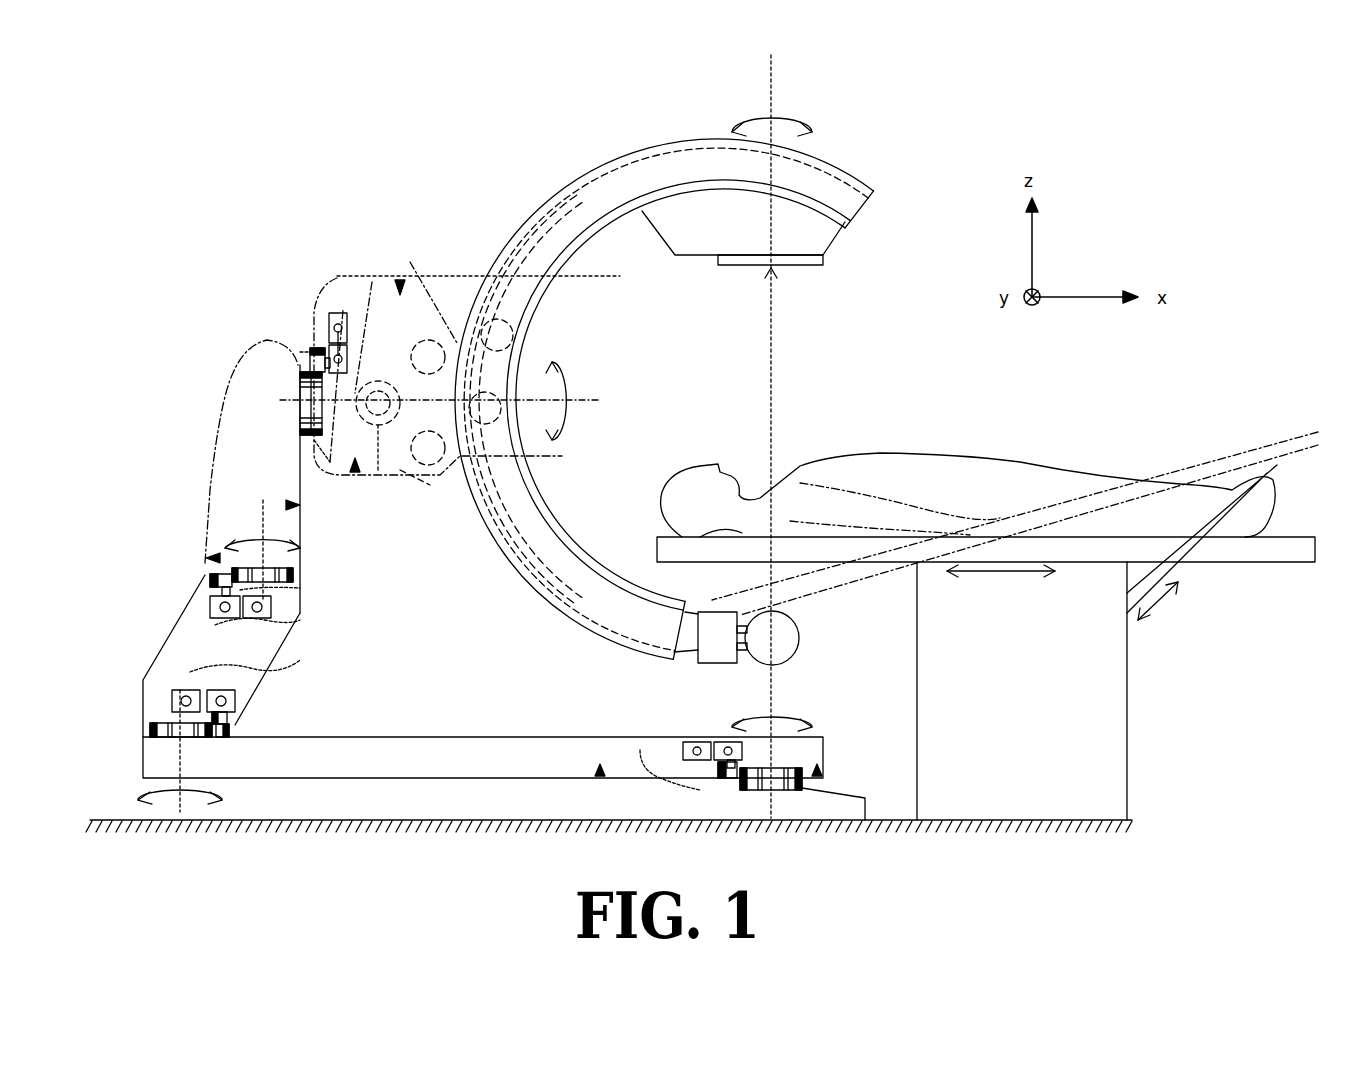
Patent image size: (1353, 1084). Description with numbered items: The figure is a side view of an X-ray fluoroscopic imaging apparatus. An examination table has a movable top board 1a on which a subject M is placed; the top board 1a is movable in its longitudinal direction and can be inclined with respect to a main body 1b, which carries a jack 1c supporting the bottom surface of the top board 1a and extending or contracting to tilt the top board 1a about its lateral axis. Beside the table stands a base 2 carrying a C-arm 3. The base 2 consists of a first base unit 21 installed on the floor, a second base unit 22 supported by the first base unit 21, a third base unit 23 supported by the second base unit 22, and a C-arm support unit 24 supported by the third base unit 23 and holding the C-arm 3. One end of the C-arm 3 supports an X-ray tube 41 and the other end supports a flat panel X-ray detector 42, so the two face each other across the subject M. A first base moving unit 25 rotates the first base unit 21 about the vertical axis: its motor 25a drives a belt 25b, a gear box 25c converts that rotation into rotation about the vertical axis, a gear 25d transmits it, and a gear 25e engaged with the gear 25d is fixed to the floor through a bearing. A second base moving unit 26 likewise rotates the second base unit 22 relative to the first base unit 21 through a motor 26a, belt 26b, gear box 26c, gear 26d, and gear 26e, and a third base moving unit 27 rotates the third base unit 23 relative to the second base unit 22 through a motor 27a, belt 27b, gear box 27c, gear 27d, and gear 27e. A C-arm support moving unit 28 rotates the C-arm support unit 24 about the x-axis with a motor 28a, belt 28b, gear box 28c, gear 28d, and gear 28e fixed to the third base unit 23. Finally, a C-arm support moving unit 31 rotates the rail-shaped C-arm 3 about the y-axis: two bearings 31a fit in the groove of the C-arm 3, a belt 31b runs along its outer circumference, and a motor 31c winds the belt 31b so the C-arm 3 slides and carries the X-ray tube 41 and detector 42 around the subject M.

The movable top board 1a is at (668, 552).
The main body 1b is at (1128, 775).
The jack 1c is at (1165, 570).
The base 2 is at (215, 315).
The C-arm 3 is at (520, 236).
The first base unit 21 is at (353, 772).
The second base unit 22 is at (185, 652).
The third base unit 23 is at (230, 492).
The C-arm support unit 24 is at (413, 292).
The first base moving unit 25 is at (830, 762).
The motor 25a is at (690, 780).
The belt 25b is at (722, 742).
The gear box 25c is at (745, 752).
The gear 25d is at (731, 760).
The gear 25e is at (802, 782).
The second base moving unit 26 is at (140, 724).
The motor 26a is at (172, 700).
The belt 26b is at (235, 700).
The gear box 26c is at (235, 712).
The gear 26d is at (230, 730).
The gear 26e is at (150, 735).
The third base moving unit 27 is at (232, 572).
The motor 27a is at (272, 606).
The belt 27b is at (300, 588).
The gear box 27c is at (222, 590).
The gear 27d is at (208, 579).
The gear 27e is at (293, 575).
The C-arm support moving unit 28 is at (306, 330).
The motor 28a is at (338, 312).
The belt 28b is at (305, 348).
The gear box 28c is at (330, 462).
The gear 28d is at (310, 362).
The gear 28e is at (300, 400).
The C-arm support moving unit 31 is at (400, 470).
The bearings 31a is at (520, 342).
The belt 31b is at (470, 330).
The motor 31c is at (445, 485).
The X-ray tube 41 is at (800, 648).
The flat panel X-ray detector 42 is at (812, 268).
The subject M is at (985, 500).